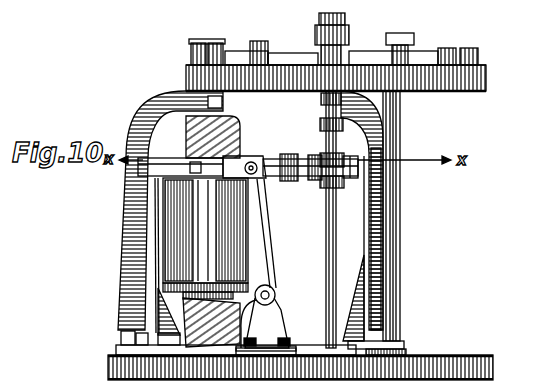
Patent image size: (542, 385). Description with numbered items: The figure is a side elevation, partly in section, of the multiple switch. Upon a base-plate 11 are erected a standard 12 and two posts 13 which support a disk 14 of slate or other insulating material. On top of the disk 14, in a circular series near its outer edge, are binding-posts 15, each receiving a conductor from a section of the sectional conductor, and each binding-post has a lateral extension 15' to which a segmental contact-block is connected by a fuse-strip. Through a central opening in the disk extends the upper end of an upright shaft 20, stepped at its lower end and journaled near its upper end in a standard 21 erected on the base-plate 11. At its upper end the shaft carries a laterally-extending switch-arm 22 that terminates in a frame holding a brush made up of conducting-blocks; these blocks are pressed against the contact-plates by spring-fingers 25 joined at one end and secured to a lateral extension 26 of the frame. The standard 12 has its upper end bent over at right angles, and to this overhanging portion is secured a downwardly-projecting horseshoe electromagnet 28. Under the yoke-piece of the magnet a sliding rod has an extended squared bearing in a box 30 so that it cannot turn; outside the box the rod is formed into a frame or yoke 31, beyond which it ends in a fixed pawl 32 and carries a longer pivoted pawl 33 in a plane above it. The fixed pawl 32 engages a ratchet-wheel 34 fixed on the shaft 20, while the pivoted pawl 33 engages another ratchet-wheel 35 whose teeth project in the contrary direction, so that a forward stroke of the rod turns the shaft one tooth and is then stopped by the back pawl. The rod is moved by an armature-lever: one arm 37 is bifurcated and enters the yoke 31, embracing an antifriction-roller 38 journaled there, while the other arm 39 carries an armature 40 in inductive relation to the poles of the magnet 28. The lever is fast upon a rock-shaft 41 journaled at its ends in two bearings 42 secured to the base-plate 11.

The base-plate 11 is at (484, 356).
The standard 12 is at (114, 288).
The posts 13 is at (391, 238).
The disk 14 is at (178, 68).
The binding-posts 15 is at (207, 38).
The lateral extension of the binding-post 15' is at (271, 38).
The upright shaft 20 is at (360, 236).
The standard 21 is at (362, 188).
The switch-arm 22 is at (342, 30).
The spring-fingers 25 is at (400, 30).
The lateral extension of the frame 26 is at (430, 35).
The electromagnet 28 is at (160, 235).
The box 30 is at (148, 168).
The frame or yoke 31 is at (216, 183).
The fixed pawl 32 is at (270, 172).
The pivoted pawl 33 is at (283, 150).
The ratchet-wheel 34 is at (308, 174).
The ratchet-wheel 35 is at (314, 118).
The arm of the armature-lever 37 is at (262, 242).
The antifriction-roller 38 is at (246, 153).
The arm of the armature-lever 39 is at (264, 295).
The armature 40 is at (211, 322).
The rock-shaft 41 is at (264, 281).
The bearings 42 is at (275, 334).